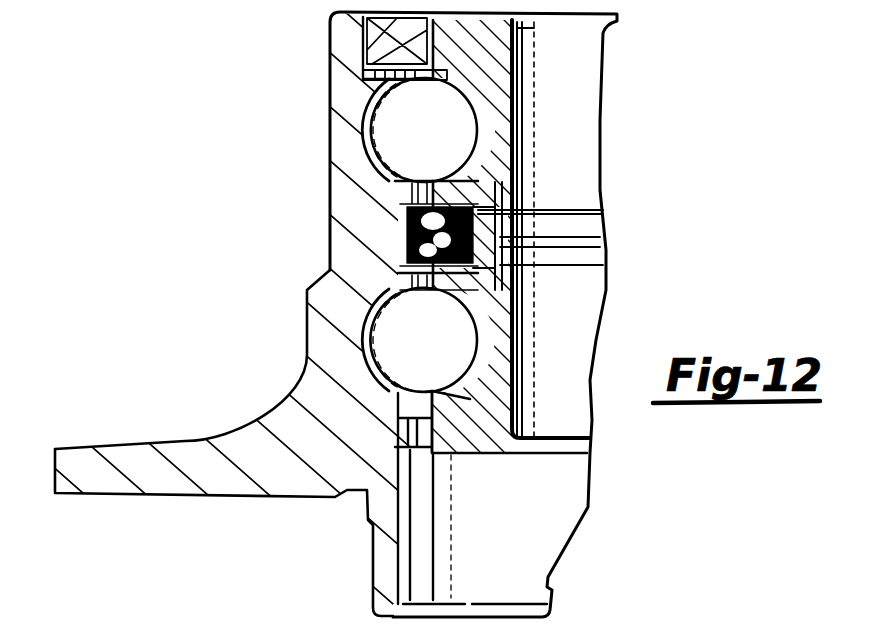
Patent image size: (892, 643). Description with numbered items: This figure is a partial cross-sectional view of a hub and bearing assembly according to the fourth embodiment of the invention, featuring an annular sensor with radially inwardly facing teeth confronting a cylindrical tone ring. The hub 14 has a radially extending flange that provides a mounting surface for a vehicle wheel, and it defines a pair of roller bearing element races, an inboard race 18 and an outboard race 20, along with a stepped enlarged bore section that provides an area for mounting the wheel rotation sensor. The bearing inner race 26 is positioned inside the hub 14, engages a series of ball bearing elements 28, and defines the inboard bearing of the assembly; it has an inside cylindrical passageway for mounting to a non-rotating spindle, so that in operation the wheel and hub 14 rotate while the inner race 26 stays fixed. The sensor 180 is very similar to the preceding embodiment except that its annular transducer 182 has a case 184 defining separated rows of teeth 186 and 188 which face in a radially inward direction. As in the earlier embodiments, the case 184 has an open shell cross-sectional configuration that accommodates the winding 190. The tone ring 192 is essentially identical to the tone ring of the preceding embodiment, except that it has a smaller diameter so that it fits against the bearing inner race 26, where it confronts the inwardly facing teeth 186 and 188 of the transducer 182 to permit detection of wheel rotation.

The hub 14 is at (165, 441).
The inboard race 18 is at (447, 127).
The outboard race 20 is at (390, 328).
The bearing inner race 26 is at (505, 413).
The ball bearing elements 28 is at (385, 140).
The sensor 180 is at (479, 239).
The annular transducer 182 is at (405, 223).
The case 184 is at (405, 253).
The teeth 186 is at (478, 206).
The teeth 188 is at (498, 291).
The winding 190 is at (600, 237).
The tone ring 192 is at (598, 247).